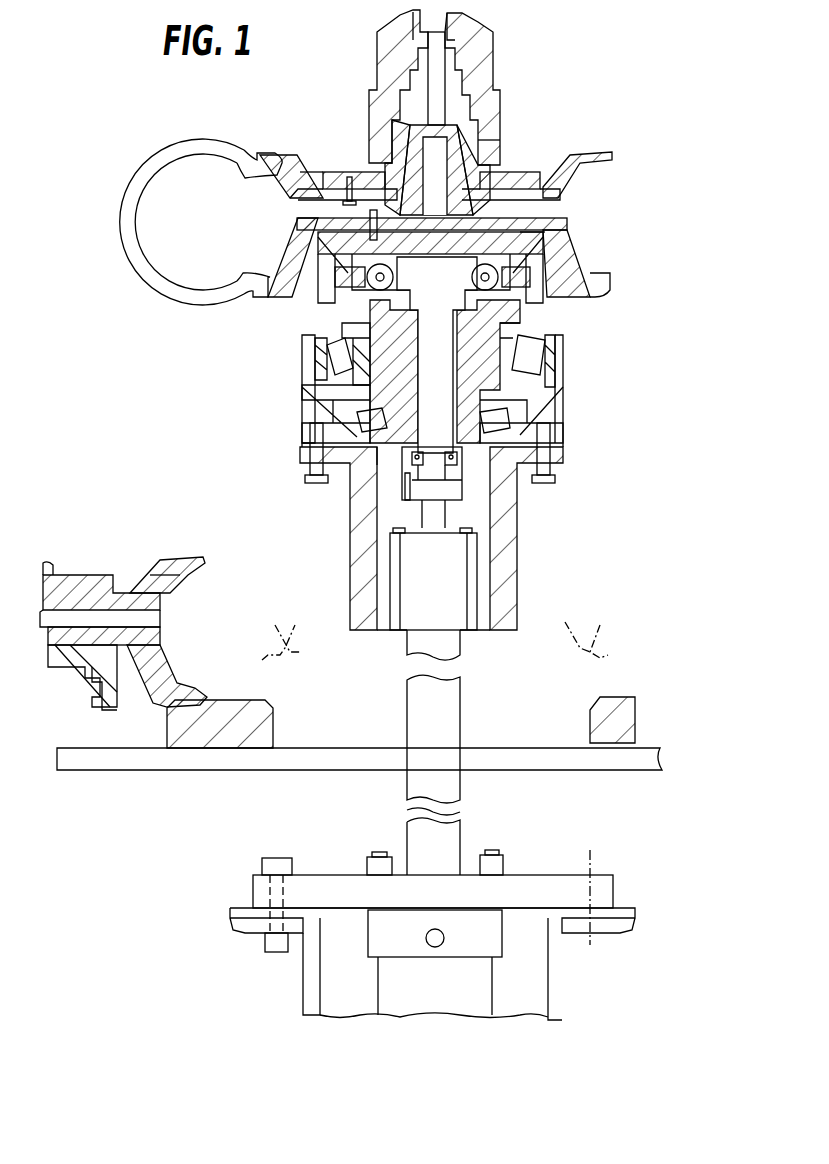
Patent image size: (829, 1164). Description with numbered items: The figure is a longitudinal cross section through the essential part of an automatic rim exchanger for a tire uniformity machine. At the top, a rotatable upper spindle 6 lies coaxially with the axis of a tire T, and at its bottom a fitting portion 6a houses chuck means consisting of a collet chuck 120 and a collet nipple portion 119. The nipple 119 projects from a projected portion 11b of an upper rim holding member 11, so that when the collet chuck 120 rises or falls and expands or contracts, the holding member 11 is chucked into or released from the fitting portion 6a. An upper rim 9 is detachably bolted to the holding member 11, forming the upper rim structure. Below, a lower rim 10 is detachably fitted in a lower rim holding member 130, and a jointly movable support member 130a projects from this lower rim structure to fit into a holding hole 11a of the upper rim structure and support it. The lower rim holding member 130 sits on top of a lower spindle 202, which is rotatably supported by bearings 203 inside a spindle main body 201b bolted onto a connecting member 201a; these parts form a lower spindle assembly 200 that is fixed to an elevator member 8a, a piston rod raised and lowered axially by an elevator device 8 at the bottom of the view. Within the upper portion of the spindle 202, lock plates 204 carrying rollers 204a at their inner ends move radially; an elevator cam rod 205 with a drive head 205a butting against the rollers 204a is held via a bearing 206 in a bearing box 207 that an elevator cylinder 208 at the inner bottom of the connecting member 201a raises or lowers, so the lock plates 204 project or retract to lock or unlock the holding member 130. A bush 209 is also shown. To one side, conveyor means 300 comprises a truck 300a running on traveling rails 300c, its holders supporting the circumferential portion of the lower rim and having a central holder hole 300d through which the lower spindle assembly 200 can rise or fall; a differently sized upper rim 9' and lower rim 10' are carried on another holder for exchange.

The tire T is at (140, 160).
The upper spindle 6 is at (490, 108).
The fitting portion 6a is at (480, 134).
The collet nipple portion 119 is at (418, 45).
The collet chuck 120 is at (458, 55).
The holding hole 11a is at (396, 138).
The projected portion 11b is at (470, 105).
The jointly movable support member 130a is at (410, 165).
The upper rim holding member 11 is at (538, 165).
The upper rim 9 is at (577, 151).
The lower rim 10 is at (443, 248).
The drive head 205a is at (540, 232).
The lower spindle 202 is at (520, 320).
The lower rim holding member 130 is at (545, 262).
The lock plates 204 is at (610, 279).
The rollers 204a is at (560, 298).
The bearings 203 is at (540, 356).
The spindle main body 201b is at (565, 398).
The lower spindle assembly 200 is at (578, 434).
The elevator cam rod 205 is at (552, 448).
The connecting member 201a is at (520, 598).
The bush 209 is at (352, 486).
The bearing 206 is at (462, 465).
The bearing box 207 is at (462, 480).
The elevator cylinder 208 is at (462, 558).
The elevator member 8a is at (461, 698).
The conveyor means 300 is at (273, 710).
The truck 300a is at (636, 720).
The traveling rails 300c is at (650, 770).
The holder hole 300d is at (108, 740).
The upper rim 9' is at (167, 549).
The lower rim 10' is at (127, 667).
The elevator device 8 is at (522, 996).